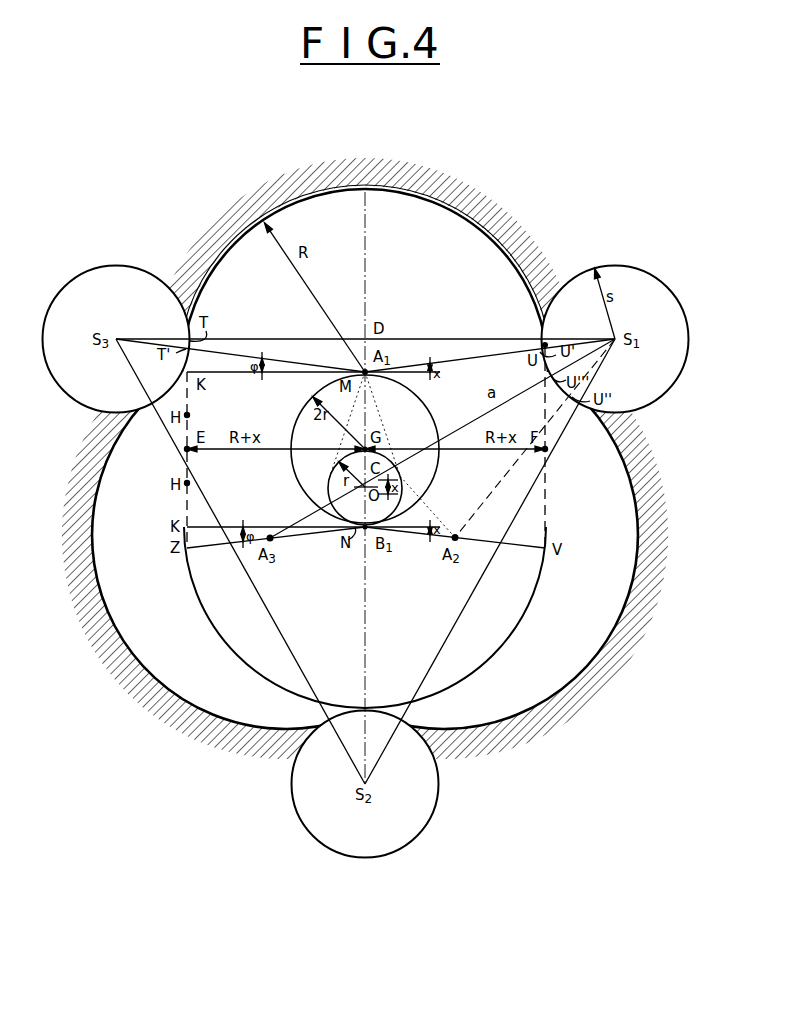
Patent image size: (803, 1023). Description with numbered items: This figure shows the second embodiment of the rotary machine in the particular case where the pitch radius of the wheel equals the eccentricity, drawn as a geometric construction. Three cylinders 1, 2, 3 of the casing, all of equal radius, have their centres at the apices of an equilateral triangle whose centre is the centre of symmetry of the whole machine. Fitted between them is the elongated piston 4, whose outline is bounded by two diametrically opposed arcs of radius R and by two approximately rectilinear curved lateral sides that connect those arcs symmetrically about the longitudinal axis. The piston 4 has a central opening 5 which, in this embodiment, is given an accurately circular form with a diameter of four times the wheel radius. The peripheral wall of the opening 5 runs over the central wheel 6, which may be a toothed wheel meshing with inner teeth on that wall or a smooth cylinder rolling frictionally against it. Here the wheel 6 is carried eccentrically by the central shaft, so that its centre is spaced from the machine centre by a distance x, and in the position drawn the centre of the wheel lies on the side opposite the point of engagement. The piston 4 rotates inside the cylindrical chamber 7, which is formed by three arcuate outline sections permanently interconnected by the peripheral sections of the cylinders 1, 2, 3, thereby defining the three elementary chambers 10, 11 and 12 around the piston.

The cylinder 1 is at (647, 292).
The cylinder 2 is at (345, 845).
The cylinder 3 is at (118, 284).
The piston 4 is at (399, 488).
The opening 5 is at (431, 411).
The central wheel 6 is at (401, 489).
The cylindrical chamber 7 is at (490, 216).
The elementary chamber 10 is at (445, 186).
The elementary chamber 11 is at (548, 688).
The elementary chamber 12 is at (150, 653).